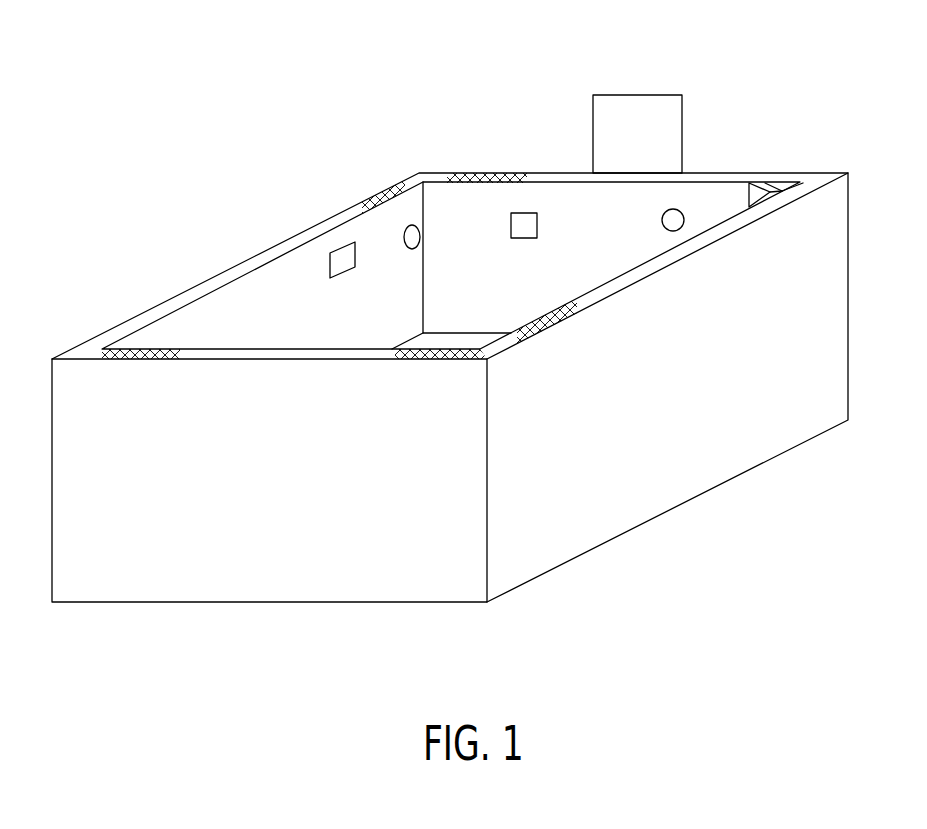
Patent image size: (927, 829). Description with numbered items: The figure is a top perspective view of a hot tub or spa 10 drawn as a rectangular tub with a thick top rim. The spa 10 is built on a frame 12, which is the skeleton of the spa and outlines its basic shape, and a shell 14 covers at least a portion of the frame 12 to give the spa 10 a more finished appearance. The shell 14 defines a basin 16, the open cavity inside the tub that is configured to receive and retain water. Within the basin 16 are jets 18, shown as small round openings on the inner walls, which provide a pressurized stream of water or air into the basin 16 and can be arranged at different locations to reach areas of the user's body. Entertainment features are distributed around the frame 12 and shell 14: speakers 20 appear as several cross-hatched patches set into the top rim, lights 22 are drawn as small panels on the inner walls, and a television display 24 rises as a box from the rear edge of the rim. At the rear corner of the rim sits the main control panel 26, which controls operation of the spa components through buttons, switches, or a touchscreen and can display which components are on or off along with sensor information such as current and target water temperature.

The spa 10 is at (308, 86).
The frame 12 is at (850, 243).
The shell 14 is at (648, 180).
The basin 16 is at (300, 266).
The jets 18 is at (412, 225).
The speakers 20 is at (383, 191).
The lights 22 is at (342, 242).
The television display 24 is at (636, 95).
The main control panel 26 is at (800, 180).